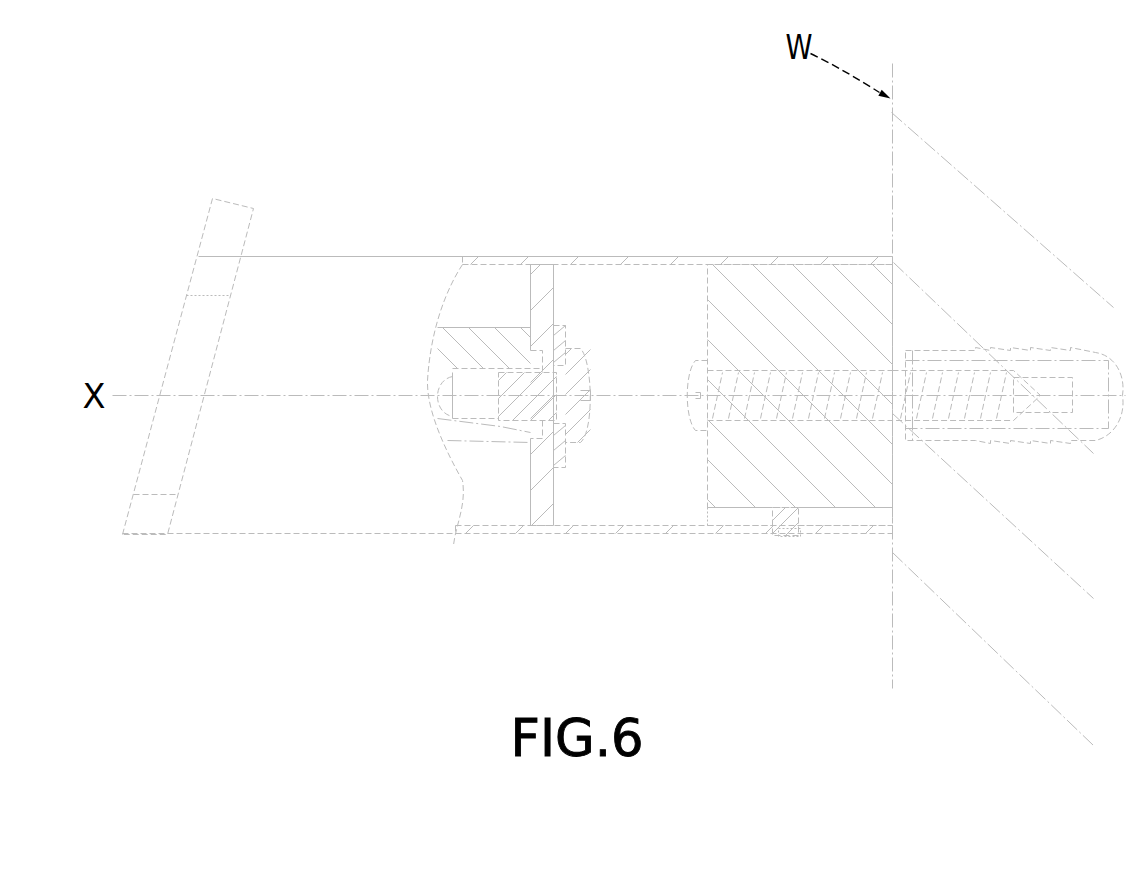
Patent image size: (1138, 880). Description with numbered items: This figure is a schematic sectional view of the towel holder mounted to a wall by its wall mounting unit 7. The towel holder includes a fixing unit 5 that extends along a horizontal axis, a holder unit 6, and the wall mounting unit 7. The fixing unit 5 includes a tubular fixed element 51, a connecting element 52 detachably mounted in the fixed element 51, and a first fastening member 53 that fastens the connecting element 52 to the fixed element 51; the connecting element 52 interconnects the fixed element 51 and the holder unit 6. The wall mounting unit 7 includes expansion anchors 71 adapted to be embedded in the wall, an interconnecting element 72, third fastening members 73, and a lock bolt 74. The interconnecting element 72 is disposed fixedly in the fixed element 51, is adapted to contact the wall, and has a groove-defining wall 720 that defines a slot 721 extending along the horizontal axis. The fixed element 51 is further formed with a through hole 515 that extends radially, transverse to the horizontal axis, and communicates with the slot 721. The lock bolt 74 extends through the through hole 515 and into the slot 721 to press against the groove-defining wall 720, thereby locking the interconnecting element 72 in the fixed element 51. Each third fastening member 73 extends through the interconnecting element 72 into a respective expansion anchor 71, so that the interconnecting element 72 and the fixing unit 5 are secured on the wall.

The fixing unit 5 is at (578, 263).
The holder unit 6 is at (200, 250).
The wall mounting unit 7 is at (707, 465).
The fixed element 51 is at (670, 257).
The connecting element 52 is at (480, 270).
The first fastening member 53 is at (588, 415).
The expansion anchor 71 is at (1028, 352).
The interconnecting element 72 is at (760, 263).
The third fastening member 73 is at (825, 370).
The lock bolt 74 is at (775, 533).
The through hole 515 is at (800, 532).
The groove-defining wall 720 is at (718, 508).
The slot 721 is at (735, 515).